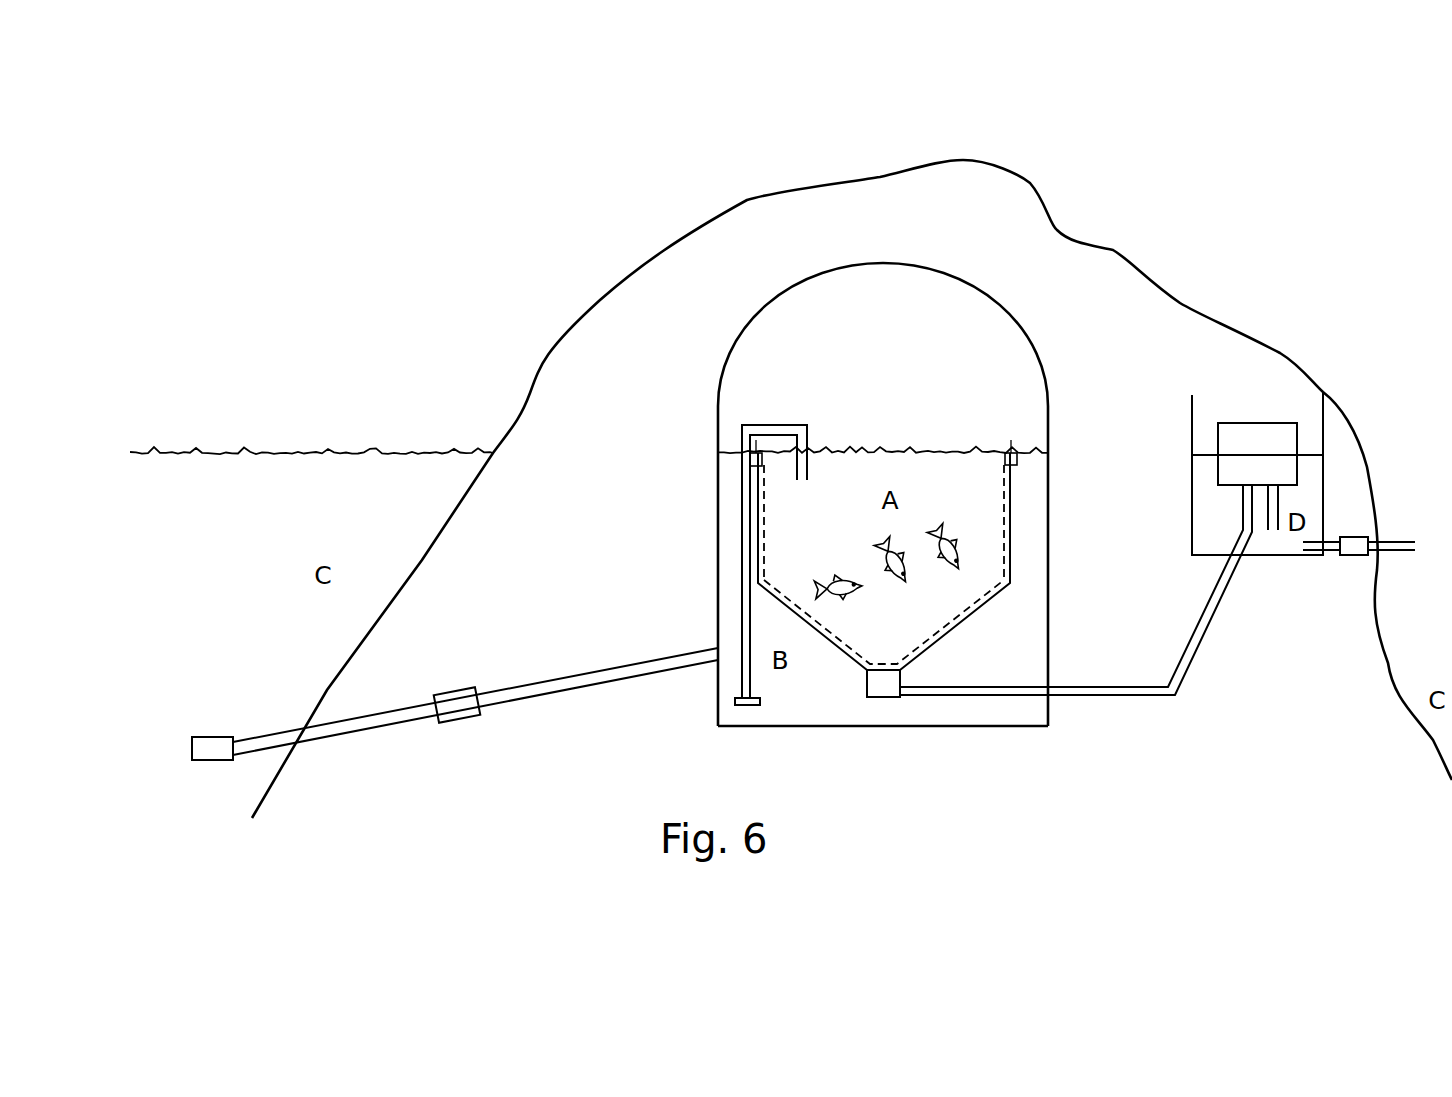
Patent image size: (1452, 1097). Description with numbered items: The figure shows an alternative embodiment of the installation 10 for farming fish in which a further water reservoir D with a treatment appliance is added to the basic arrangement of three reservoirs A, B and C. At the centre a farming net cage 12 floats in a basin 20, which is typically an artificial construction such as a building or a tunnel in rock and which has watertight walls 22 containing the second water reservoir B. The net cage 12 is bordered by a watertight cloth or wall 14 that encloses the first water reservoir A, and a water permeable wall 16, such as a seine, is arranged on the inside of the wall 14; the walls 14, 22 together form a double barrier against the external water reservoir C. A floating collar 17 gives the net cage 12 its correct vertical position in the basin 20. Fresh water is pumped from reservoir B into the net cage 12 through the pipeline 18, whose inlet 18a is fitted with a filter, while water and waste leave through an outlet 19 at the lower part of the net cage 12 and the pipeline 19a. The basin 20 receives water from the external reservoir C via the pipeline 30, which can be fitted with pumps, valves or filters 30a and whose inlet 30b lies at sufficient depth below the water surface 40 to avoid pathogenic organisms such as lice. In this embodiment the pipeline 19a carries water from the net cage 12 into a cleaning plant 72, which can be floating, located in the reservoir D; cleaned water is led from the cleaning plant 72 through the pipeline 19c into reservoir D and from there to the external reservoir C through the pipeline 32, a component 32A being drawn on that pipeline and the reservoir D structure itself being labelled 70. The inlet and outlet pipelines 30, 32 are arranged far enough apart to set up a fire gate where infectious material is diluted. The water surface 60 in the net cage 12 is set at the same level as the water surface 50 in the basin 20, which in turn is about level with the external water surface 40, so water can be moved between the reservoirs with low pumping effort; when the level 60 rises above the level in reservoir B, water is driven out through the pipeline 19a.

The installation 10 is at (577, 142).
The farming net cage 12 is at (973, 510).
The watertight cloth/wall 14 is at (1013, 550).
The water permeable wall 16 is at (992, 600).
The floating collar 17 is at (1020, 458).
The pipeline 18 is at (745, 582).
The inlet 18a is at (735, 703).
The outlet 19 is at (884, 700).
The pipeline 19a is at (1090, 697).
The pipeline 19c is at (1278, 508).
The basin 20 is at (1025, 615).
The watertight walls 22 is at (1050, 652).
The pipeline 30 is at (347, 717).
The pumps/valves/filters 30a is at (452, 693).
The inlet 30b is at (193, 748).
The pipeline 32 is at (1398, 555).
The discharge valve 32A is at (1355, 537).
The water surface 40 is at (180, 458).
The water surface 50 is at (1038, 448).
The water surface 60 is at (893, 465).
The treatment tank 70 is at (1323, 395).
The cleaning plant 72 is at (1243, 423).